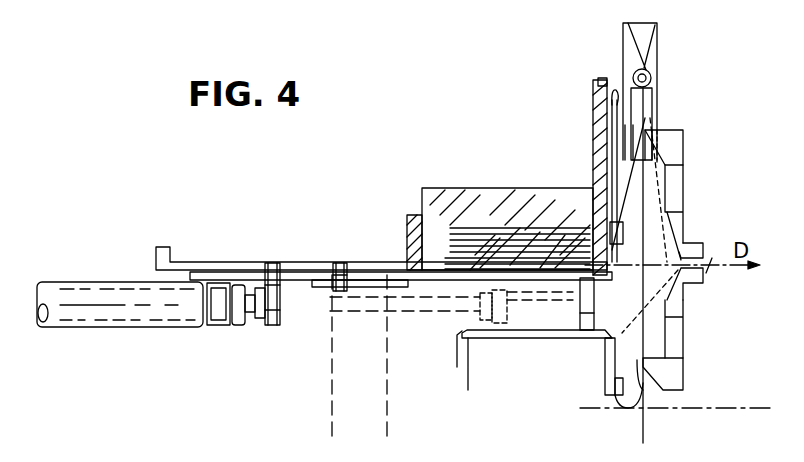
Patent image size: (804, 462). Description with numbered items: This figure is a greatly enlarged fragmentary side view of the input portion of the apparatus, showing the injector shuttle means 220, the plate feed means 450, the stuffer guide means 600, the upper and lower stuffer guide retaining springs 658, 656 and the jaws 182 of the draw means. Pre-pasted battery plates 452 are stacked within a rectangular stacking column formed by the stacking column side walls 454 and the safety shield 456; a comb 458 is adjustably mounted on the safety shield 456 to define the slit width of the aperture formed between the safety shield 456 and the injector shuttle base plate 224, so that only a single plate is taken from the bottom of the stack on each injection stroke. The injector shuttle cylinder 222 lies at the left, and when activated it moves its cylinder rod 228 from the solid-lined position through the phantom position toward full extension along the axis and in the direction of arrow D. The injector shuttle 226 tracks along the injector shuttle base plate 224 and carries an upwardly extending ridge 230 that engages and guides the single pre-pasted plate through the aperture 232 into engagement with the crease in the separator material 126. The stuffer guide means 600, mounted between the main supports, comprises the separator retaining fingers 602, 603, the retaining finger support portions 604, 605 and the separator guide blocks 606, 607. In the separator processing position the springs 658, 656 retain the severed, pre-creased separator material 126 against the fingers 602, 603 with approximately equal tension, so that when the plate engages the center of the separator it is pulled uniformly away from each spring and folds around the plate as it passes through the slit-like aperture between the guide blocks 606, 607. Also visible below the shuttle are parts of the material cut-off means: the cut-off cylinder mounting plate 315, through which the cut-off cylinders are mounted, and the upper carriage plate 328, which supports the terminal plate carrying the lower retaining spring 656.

The injector shuttle cylinder 222 is at (112, 305).
The injector shuttle 226 is at (300, 285).
The ridge 230 is at (297, 240).
The injector shuttle means 220 is at (318, 262).
The injector shuttle base plate 224 is at (403, 241).
The cylinder rod 228 is at (445, 308).
The plate feed means 450 is at (408, 209).
The stacking column side walls 454 is at (490, 195).
The pre-pasted battery plates 452 is at (545, 228).
The comb 458 is at (597, 105).
The safety shield 456 is at (611, 95).
The upper stuffer guide retaining spring 658 is at (618, 88).
The jaws 182 is at (648, 63).
The stuffer guide means 600 is at (685, 245).
The separator retaining finger 602 is at (720, 148).
The retaining finger support portion 604 is at (688, 188).
The separator material 126 is at (672, 170).
The separator guide block 606 is at (690, 240).
The separator guide block 607 is at (690, 306).
The retaining finger support portion 605 is at (688, 340).
The separator retaining finger 603 is at (668, 378).
The aperture 232 is at (598, 318).
The upper carriage plate 328 is at (573, 336).
The cut-off cylinder mounting plate 315 is at (463, 352).
The lower stuffer guide retaining spring 656 is at (636, 412).